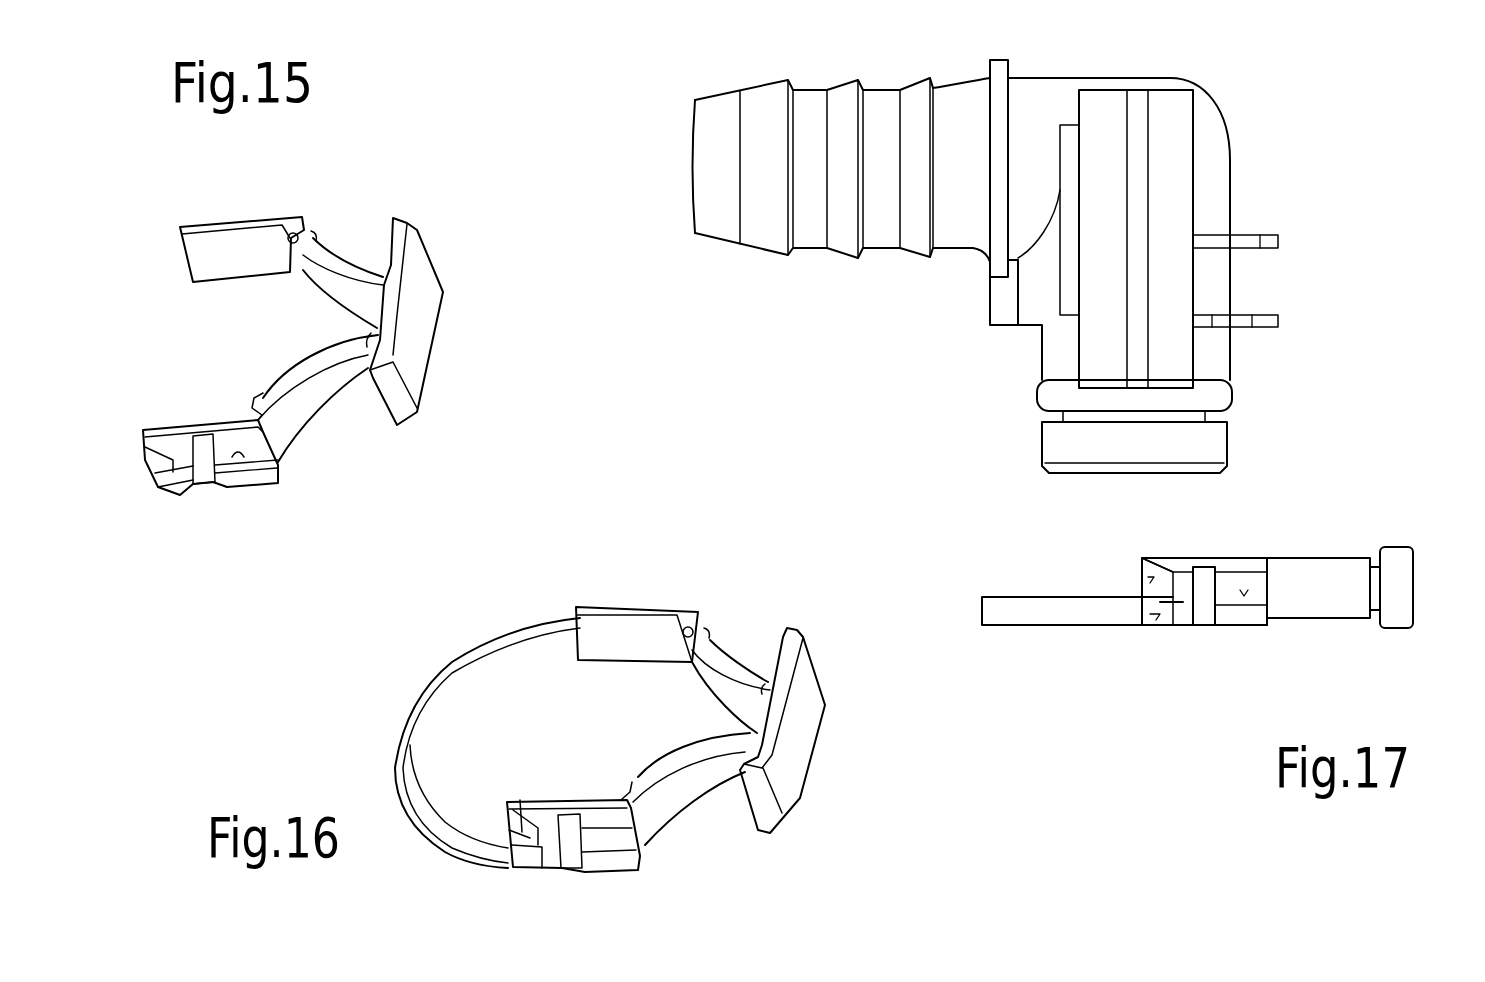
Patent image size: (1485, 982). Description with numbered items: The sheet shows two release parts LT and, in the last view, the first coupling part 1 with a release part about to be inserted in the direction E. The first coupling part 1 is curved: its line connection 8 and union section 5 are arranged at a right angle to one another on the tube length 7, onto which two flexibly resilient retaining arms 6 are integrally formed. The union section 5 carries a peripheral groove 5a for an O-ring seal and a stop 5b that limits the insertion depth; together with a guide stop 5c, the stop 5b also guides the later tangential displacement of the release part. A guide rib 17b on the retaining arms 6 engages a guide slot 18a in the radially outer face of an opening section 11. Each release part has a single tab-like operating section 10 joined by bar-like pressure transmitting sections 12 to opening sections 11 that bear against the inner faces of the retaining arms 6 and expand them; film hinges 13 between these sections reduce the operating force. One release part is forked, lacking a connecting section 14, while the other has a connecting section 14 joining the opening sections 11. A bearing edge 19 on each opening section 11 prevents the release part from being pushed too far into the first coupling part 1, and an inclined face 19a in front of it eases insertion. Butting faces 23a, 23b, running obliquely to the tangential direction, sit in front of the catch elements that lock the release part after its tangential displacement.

In FIG. 17, the first coupling part 1 is at (1012, 250).
In FIG. 17, the union section 5 is at (1212, 438).
In FIG. 17, the peripheral groove 5a is at (1063, 418).
In FIG. 17, the stop 5b is at (1272, 322).
In FIG. 17, the guide stop 5c is at (1263, 243).
In FIG. 17, the retaining arms 6 is at (1177, 133).
In FIG. 17, the tube length 7 is at (1042, 105).
In FIG. 17, the line connection 8 is at (774, 234).
In FIG. 15, the operating section 10 is at (425, 334).
In FIG. 16, the operating section 10 is at (802, 732).
In FIG. 17, the operating section 10 is at (1397, 590).
In FIG. 15, the opening section 11 is at (206, 246).
In FIG. 16, the opening section 11 is at (612, 629).
In FIG. 17, the opening section 11 is at (1247, 597).
In FIG. 15, the pressure transmitting section 12 is at (311, 359).
In FIG. 16, the pressure transmitting section 12 is at (664, 763).
In FIG. 17, the pressure transmitting section 12 is at (1327, 597).
In FIG. 15, the film hinge 13 is at (291, 233).
In FIG. 16, the film hinge 13 is at (766, 680).
In FIG. 17, the film hinge 13 is at (1376, 566).
In FIG. 16, the connecting section 14 is at (426, 698).
In FIG. 17, the connecting section 14 is at (1010, 613).
In FIG. 17, the guide rib 17b is at (1140, 208).
In FIG. 15, the guide slot 18a is at (211, 466).
In FIG. 16, the guide slot 18a is at (574, 852).
In FIG. 17, the guide slot 18a is at (1203, 587).
In FIG. 15, the bearing edge 19 is at (240, 464).
In FIG. 16, the bearing edge 19 is at (518, 840).
In FIG. 17, the bearing edge 19 is at (1260, 590).
In FIG. 15, the inclined face 19a is at (183, 430).
In FIG. 16, the inclined face 19a is at (533, 808).
In FIG. 17, the inclined face 19a is at (1170, 556).
In FIG. 15, the butting face 23a is at (162, 461).
In FIG. 16, the butting face 23a is at (533, 850).
In FIG. 17, the butting face 23a is at (1142, 577).
In FIG. 15, the butting face 23b is at (173, 483).
In FIG. 16, the butting face 23b is at (502, 863).
In FIG. 17, the butting face 23b is at (1157, 613).